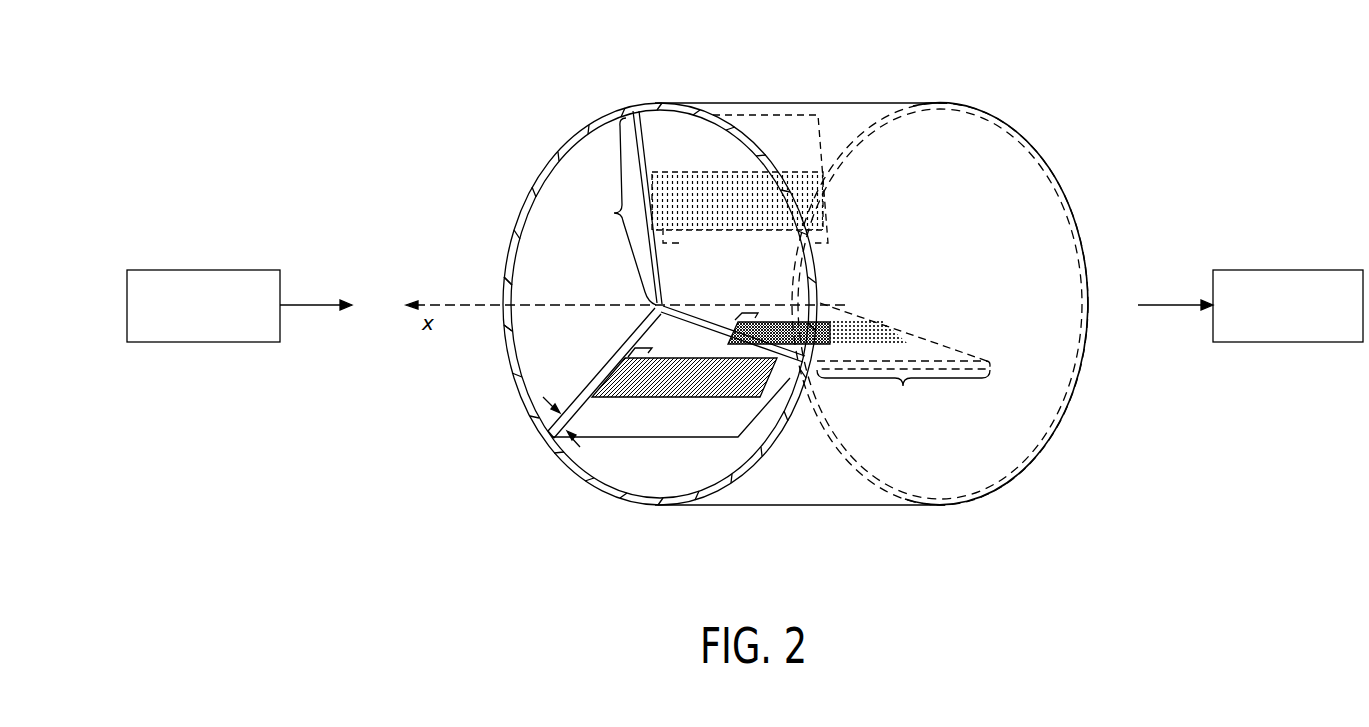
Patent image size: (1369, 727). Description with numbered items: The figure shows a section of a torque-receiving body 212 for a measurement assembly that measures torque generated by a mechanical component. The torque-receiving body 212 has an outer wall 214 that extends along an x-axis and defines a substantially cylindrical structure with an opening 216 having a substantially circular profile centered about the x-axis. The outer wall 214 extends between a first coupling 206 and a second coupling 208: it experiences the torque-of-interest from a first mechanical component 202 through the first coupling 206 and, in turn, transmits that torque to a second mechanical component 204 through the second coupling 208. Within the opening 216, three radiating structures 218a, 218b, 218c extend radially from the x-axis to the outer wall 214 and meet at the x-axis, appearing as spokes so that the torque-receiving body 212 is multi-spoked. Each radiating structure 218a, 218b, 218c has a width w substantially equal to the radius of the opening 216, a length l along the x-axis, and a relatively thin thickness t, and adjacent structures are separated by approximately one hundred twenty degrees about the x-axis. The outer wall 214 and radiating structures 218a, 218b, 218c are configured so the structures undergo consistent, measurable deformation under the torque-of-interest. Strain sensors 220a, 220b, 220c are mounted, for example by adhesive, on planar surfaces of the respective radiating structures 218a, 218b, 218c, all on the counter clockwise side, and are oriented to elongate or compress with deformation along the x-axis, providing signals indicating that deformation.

The first mechanical component 202 is at (208, 268).
The second mechanical component 204 is at (1275, 268).
The first coupling 206 is at (322, 316).
The second coupling 208 is at (1176, 316).
The torque-receiving body 212 is at (963, 125).
The outer wall 214 is at (570, 467).
The opening 216 is at (548, 240).
The radiating structure 218a is at (646, 133).
The radiating structure 218b is at (728, 403).
The radiating structure 218c is at (928, 337).
The strain sensor 220a is at (705, 168).
The strain sensor 220b is at (650, 397).
The strain sensor 220c is at (790, 322).